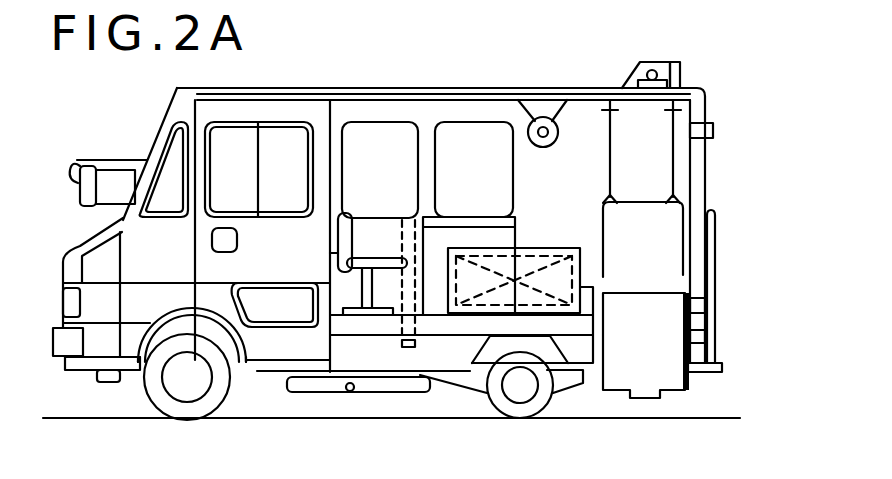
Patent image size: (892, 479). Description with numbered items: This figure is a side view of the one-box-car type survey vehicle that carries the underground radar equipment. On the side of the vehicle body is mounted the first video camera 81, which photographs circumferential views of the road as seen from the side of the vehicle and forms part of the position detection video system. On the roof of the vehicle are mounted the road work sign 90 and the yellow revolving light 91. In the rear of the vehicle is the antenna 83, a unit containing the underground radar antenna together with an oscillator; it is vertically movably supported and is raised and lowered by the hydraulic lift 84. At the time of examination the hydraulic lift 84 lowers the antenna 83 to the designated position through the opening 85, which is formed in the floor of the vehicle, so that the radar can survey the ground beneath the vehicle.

The first video camera 81 is at (542, 116).
The yellow revolving light 91 is at (650, 83).
The road work sign 90 is at (679, 70).
The hydraulic lift 84 is at (611, 146).
The opening 85 is at (601, 357).
The antenna 83 is at (668, 368).